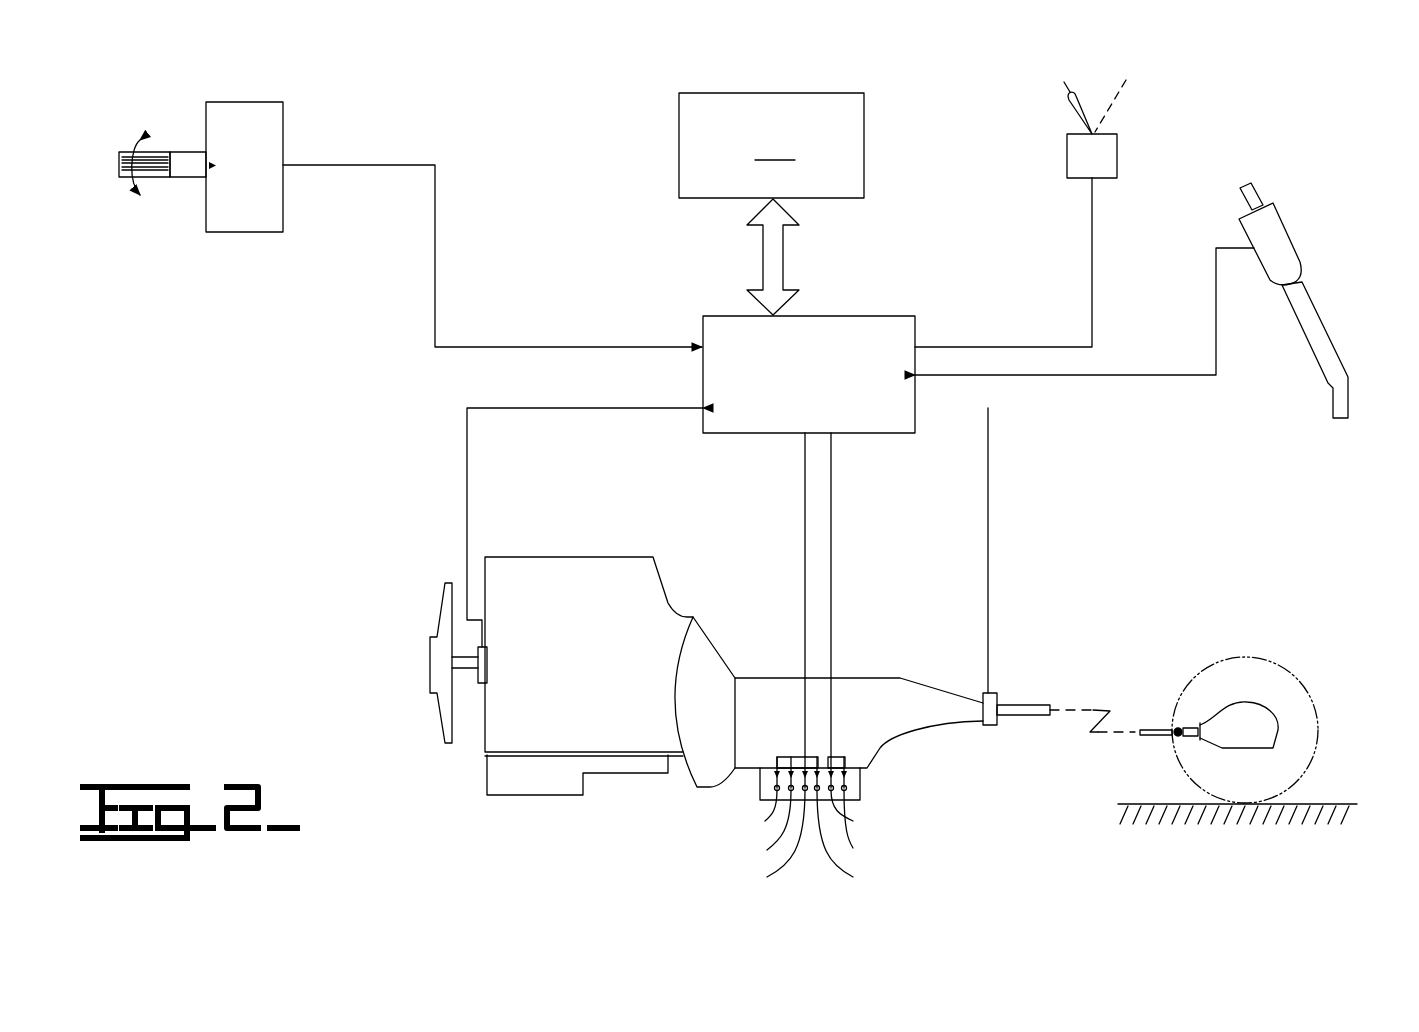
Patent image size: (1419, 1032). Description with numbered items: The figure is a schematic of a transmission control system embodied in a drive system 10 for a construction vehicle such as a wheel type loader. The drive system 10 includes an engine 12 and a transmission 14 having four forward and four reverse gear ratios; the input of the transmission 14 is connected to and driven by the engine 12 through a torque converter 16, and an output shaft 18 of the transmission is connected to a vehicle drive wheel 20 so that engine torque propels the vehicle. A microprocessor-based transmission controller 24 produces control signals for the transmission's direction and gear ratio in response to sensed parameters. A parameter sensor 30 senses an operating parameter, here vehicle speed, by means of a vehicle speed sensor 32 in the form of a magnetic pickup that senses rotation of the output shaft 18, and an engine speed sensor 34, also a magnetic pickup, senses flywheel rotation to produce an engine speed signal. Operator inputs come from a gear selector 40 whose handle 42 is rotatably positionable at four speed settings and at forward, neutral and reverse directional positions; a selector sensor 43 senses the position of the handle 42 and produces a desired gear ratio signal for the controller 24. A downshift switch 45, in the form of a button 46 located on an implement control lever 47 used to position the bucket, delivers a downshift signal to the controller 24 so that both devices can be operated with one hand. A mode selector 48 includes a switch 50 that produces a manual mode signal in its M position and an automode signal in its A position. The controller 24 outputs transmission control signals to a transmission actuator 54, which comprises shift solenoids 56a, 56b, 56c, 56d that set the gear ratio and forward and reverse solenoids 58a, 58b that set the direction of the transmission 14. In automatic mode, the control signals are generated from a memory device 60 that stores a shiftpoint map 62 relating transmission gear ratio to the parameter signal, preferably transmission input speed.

The drive system 10 is at (1147, 526).
The engine 12 is at (544, 621).
The transmission 14 is at (890, 740).
The torque converter 16 is at (713, 692).
The output shaft 18 is at (1030, 680).
The vehicle drive wheel 20 is at (1250, 657).
The transmission controller 24 is at (873, 316).
The parameter sensor 30 is at (1030, 596).
The vehicle speed sensor 32 is at (990, 726).
The engine speed sensor 34 is at (480, 690).
The gear selector 40 is at (404, 202).
The handle 42 is at (180, 178).
The selector sensor 43 is at (284, 194).
The downshift switch 45 is at (1153, 292).
The button 46 is at (1258, 197).
The implement control lever 47 is at (1312, 350).
The mode selector 48 is at (1106, 194).
The switch 50 is at (1067, 160).
The transmission actuator 54 is at (811, 675).
The shift solenoid 56a is at (748, 795).
The shift solenoid 56b is at (755, 810).
The shift solenoid 56c is at (763, 824).
The shift solenoid 56d is at (860, 824).
The forward solenoid 58a is at (867, 795).
The reverse solenoid 58b is at (874, 810).
The memory device 60 is at (771, 184).
The shiftpoint map 62 is at (775, 148).